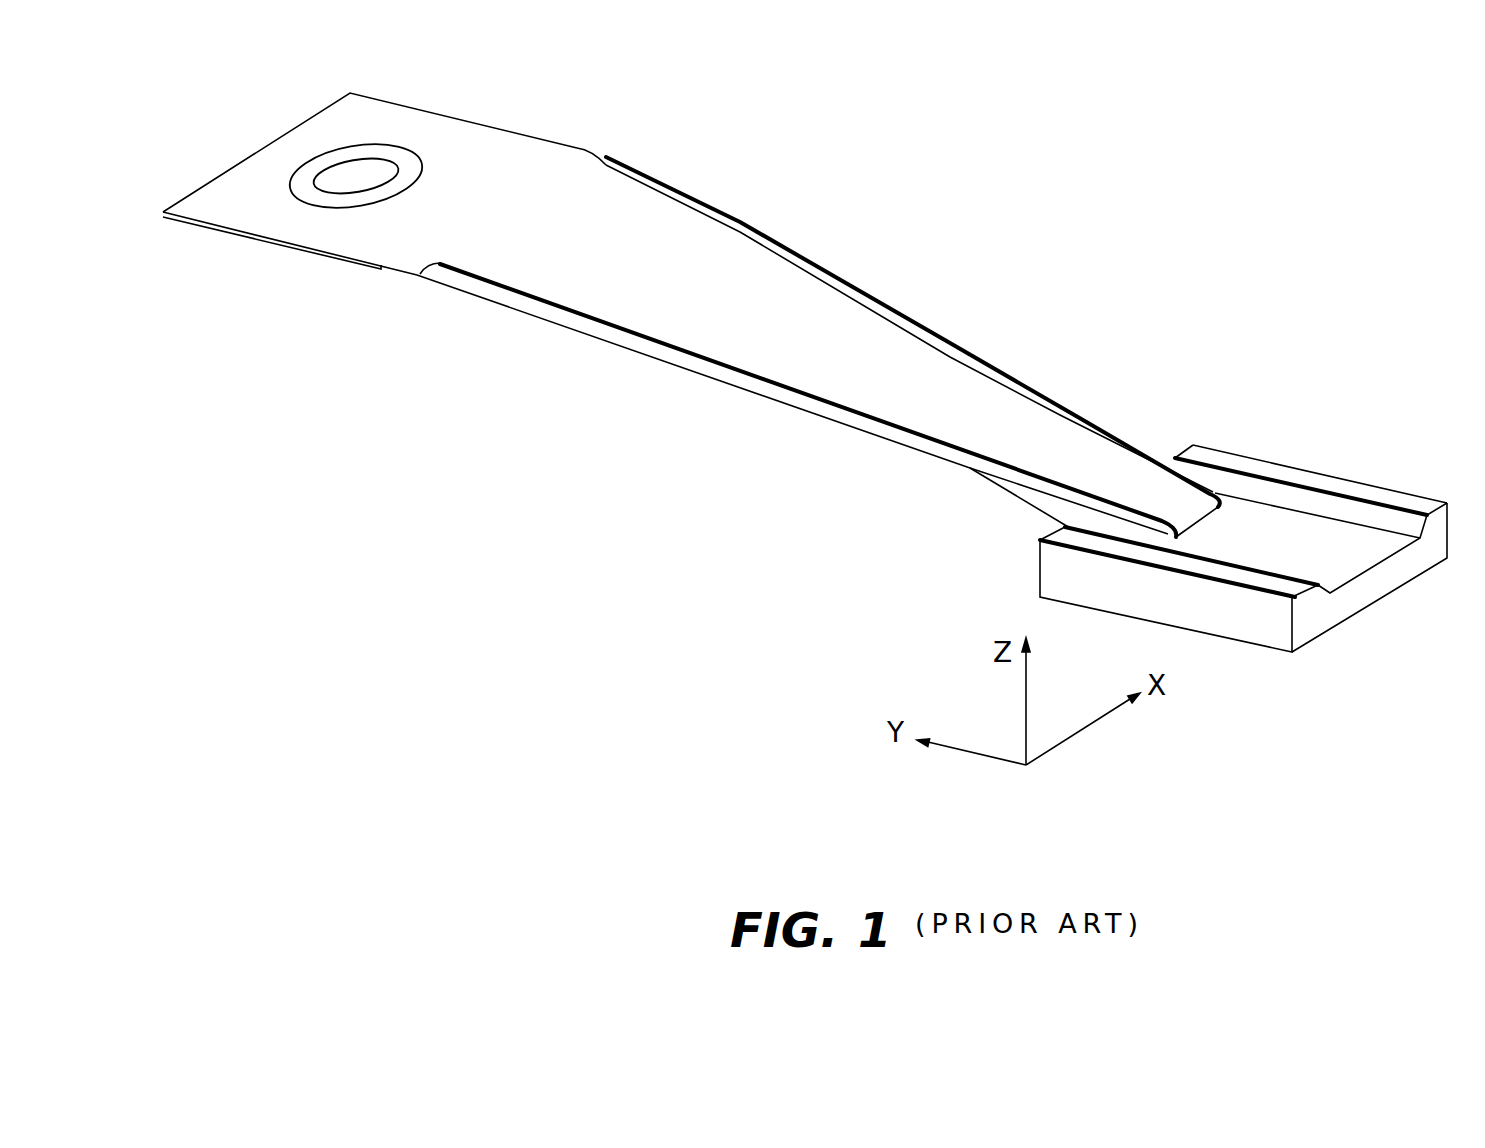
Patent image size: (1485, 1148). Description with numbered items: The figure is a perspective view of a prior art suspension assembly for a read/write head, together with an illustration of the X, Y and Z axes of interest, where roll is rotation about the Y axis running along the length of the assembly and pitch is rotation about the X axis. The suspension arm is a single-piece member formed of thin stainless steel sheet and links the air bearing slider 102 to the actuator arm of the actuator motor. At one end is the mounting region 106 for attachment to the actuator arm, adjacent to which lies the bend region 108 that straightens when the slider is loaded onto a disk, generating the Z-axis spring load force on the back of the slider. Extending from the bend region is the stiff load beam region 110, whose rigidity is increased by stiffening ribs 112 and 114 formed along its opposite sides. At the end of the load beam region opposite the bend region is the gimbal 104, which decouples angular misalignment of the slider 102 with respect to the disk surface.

The slider 102 is at (1312, 603).
The gimbal 104 is at (1375, 547).
The mounting region 106 is at (338, 238).
The bend region 108 is at (530, 227).
The load beam region 110 is at (760, 313).
The stiffening rib 112 is at (1057, 401).
The stiffening rib 114 is at (932, 445).